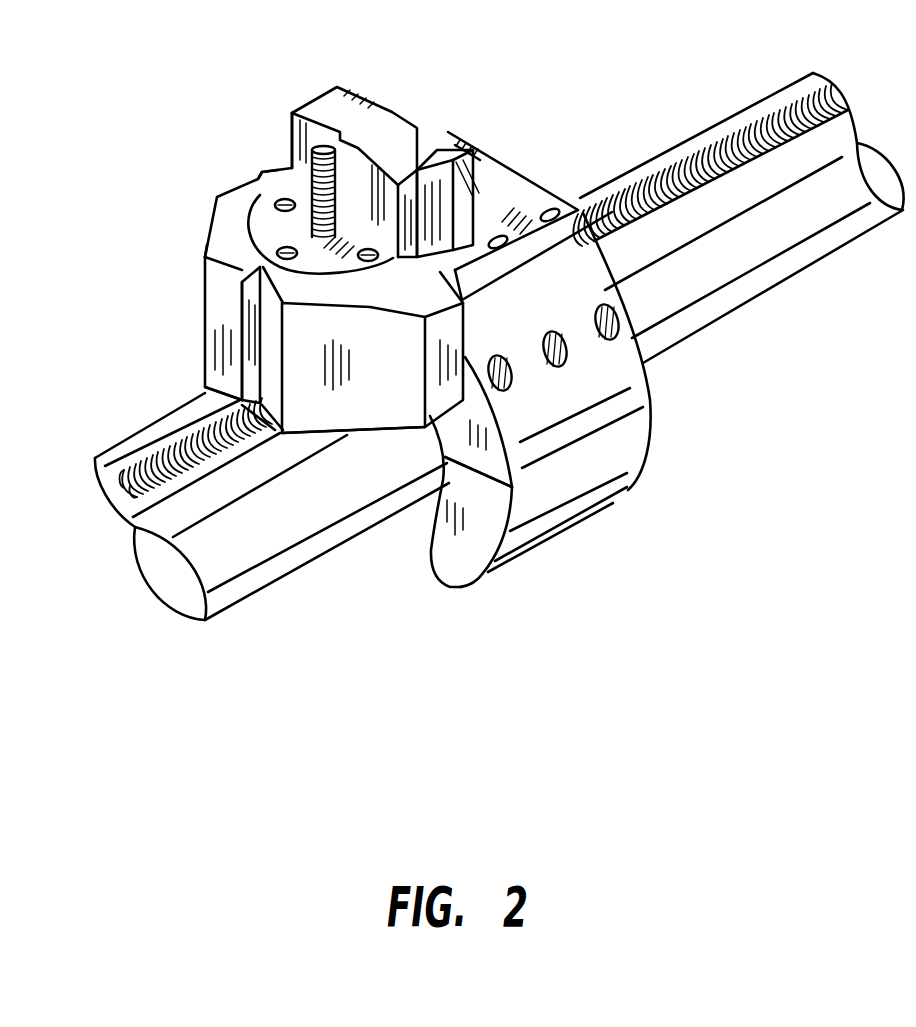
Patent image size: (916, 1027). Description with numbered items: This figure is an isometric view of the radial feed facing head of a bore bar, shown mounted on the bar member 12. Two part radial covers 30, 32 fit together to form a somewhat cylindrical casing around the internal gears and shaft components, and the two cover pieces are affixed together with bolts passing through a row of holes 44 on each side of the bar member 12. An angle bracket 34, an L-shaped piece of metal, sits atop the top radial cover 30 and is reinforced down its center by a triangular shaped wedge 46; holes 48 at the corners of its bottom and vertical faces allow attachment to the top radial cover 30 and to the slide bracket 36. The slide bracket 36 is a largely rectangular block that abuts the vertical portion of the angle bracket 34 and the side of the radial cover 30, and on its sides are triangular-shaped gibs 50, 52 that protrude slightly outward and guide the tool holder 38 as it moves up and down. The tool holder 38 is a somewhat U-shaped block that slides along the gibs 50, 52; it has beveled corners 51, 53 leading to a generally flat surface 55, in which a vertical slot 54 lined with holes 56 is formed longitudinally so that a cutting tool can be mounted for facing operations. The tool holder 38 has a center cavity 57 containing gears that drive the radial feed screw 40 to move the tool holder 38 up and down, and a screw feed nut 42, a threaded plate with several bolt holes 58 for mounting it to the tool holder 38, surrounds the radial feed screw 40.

The bar member 12 is at (188, 588).
The top radial cover 30 is at (627, 387).
The radial cover 32 is at (608, 477).
The angle bracket 34 is at (532, 202).
The slide bracket 36 is at (407, 185).
The tool holder 38 is at (218, 235).
The radial feed screw 40 is at (313, 170).
The screw feed nut 42 is at (268, 230).
The row of holes 44 is at (512, 380).
The triangular shaped wedge 46 is at (465, 150).
The holes 48 is at (508, 242).
The gib 50 is at (390, 105).
The beveled corner 51 is at (300, 410).
The gib 52 is at (290, 110).
The beveled corner 53 is at (203, 240).
The vertical slot 54 is at (257, 322).
The flat surface 55 is at (218, 377).
The holes 56 is at (240, 282).
The center cavity 57 is at (268, 181).
The bolt holes 58 is at (370, 268).